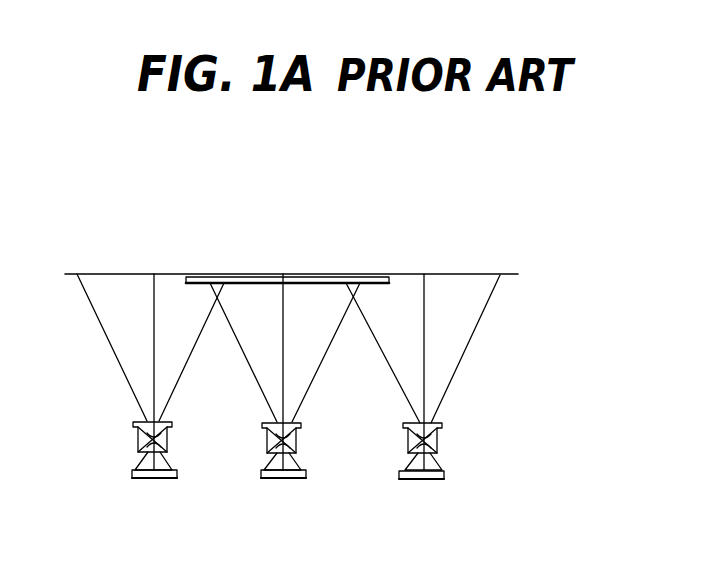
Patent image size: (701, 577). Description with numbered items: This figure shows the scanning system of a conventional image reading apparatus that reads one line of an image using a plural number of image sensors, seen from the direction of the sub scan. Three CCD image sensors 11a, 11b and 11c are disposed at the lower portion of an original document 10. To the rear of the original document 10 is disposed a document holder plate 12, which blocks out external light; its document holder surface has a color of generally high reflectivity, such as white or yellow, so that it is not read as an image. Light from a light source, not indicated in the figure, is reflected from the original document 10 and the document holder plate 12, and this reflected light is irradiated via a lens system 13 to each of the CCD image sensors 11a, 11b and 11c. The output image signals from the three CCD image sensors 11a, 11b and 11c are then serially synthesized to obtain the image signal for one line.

The original document 10 is at (313, 283).
The document holder plate 12 is at (443, 277).
The lens system 13 is at (167, 440).
The CCD image sensor 11a is at (178, 477).
The CCD image sensor 11b is at (307, 477).
The CCD image sensor 11c is at (445, 477).